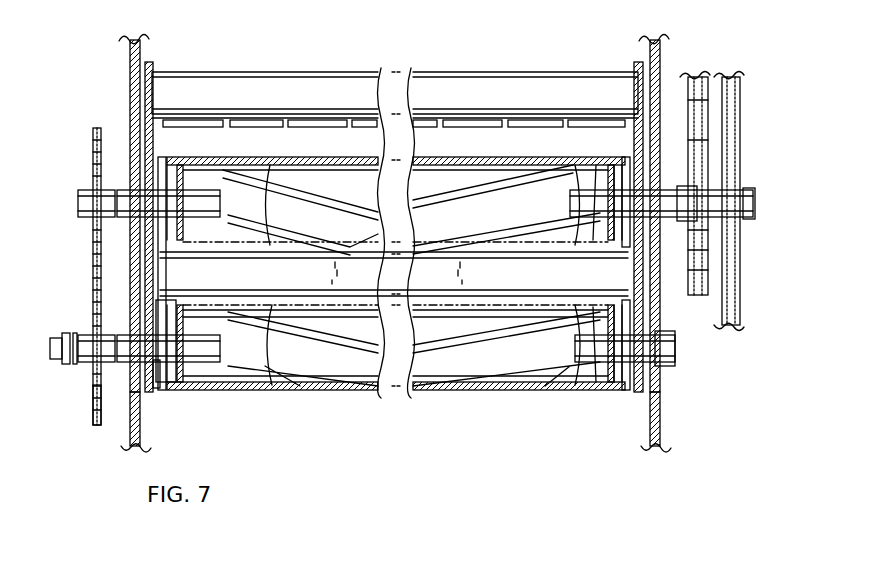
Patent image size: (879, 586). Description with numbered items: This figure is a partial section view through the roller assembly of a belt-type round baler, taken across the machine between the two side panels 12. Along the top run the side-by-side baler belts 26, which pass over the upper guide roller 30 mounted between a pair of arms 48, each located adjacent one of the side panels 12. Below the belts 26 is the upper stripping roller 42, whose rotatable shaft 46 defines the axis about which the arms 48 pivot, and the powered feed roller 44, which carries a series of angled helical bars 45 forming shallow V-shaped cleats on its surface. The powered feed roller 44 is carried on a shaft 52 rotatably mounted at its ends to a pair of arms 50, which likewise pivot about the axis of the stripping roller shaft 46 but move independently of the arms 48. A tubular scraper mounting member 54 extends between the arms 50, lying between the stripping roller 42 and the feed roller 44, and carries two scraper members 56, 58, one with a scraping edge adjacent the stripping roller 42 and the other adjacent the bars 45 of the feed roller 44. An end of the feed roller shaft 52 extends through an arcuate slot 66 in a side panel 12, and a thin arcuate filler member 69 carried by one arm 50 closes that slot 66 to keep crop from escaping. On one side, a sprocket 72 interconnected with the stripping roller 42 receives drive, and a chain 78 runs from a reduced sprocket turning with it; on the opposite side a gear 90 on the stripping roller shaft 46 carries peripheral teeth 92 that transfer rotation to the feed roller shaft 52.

The side panel 12 is at (133, 426).
The baler belts 26 is at (318, 134).
The upper guide roller 30 is at (526, 73).
The upper stripping roller 42 is at (602, 152).
The powered feed roller 44 is at (543, 406).
The helical bars 45 is at (272, 346).
The rotatable shaft 46 is at (579, 156).
The arms 48 is at (135, 88).
The arms 50 is at (150, 273).
The shaft 52 is at (594, 388).
The tubular scraper mounting member 54 is at (185, 264).
The scraper member 56 is at (80, 195).
The scraper member 58 is at (150, 305).
The arcuate slot 66 is at (97, 397).
The filler member 69 is at (154, 372).
The sprocket 72 is at (706, 256).
The chain 78 is at (740, 292).
The gear 90 is at (88, 152).
The teeth 92 is at (87, 312).